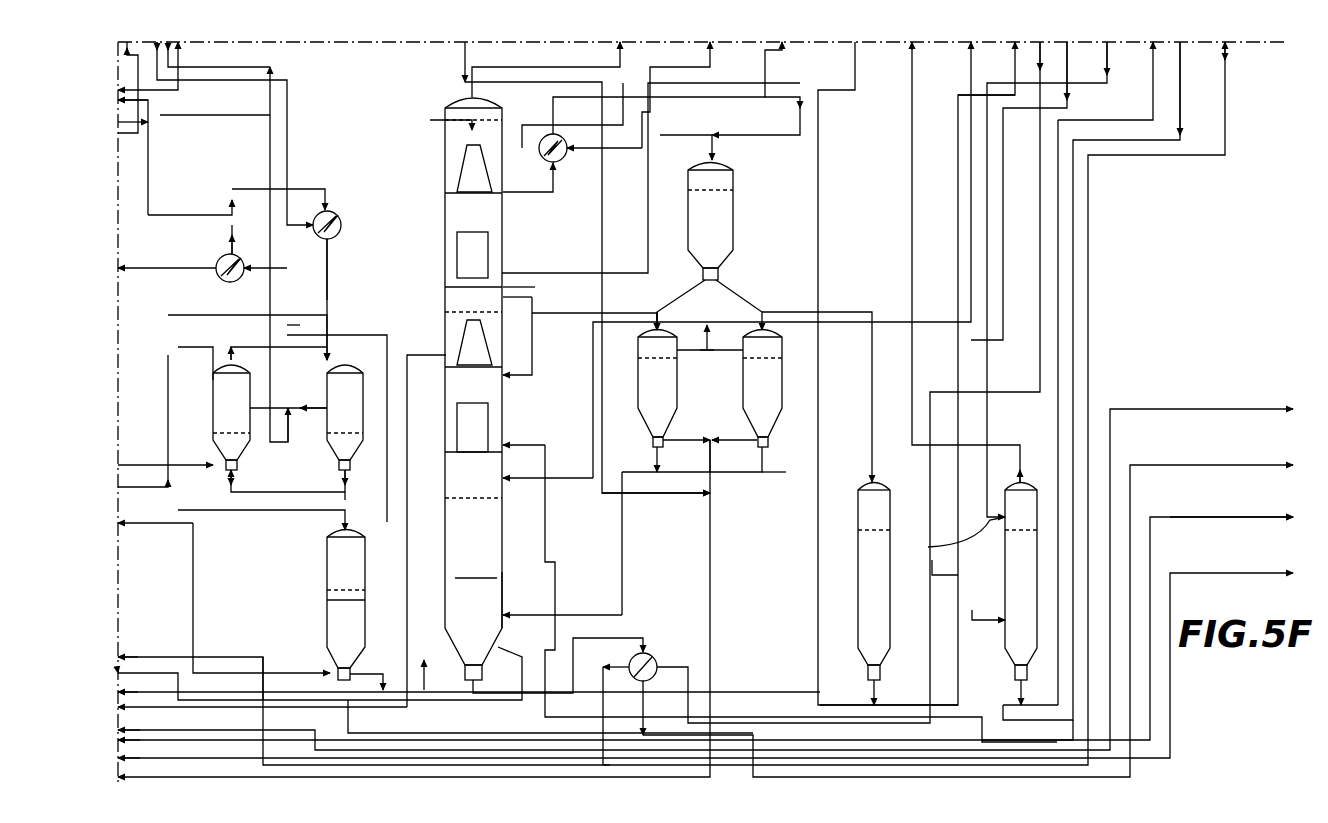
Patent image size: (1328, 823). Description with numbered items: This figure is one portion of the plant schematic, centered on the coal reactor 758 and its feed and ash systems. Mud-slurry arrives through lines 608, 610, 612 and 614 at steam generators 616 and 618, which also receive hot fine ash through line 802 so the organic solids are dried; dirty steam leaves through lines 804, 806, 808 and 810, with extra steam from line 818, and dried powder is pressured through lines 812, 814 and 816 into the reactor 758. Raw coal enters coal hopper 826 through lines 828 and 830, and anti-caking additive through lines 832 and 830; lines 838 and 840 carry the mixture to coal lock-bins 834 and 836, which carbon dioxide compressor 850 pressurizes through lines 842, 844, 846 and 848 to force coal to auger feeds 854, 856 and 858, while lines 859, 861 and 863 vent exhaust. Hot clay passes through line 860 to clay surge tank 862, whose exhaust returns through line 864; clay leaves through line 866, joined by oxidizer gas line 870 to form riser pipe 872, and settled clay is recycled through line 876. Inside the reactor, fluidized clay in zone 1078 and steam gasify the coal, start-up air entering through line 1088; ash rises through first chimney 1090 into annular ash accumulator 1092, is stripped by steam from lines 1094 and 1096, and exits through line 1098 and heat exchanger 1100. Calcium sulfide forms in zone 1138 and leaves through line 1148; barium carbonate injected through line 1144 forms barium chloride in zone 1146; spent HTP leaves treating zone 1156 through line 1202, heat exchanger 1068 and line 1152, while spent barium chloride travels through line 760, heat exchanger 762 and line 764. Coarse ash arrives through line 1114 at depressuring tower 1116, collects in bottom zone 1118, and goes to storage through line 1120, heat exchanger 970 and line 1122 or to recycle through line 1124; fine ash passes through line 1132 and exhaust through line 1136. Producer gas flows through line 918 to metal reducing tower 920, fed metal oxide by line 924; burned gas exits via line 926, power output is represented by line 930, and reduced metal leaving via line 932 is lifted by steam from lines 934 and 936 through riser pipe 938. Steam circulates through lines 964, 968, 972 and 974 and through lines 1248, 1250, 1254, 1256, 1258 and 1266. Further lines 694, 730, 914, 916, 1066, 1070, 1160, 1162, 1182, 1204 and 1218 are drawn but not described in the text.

The line 608 is at (215, 115).
The line 610 is at (289, 125).
The line 612 is at (288, 254).
The line 614 is at (312, 395).
The steam generator 616 is at (213, 405).
The steam generator 618 is at (345, 408).
The line 694 is at (140, 730).
The line 730 is at (128, 690).
The coal reactor 758 is at (505, 552).
The line 760 is at (465, 375).
The heat exchanger 762 is at (338, 218).
The line 764 is at (232, 215).
The line 802 is at (272, 92).
The line 804 is at (232, 315).
The line 806 is at (350, 320).
The line 808 is at (372, 345).
The line 810 is at (423, 531).
The line 812 is at (240, 478).
The line 814 is at (345, 478).
The line 816 is at (380, 500).
The line 818 is at (420, 718).
The coal hopper 826 is at (735, 225).
The line 828 is at (780, 125).
The line 830 is at (715, 145).
The line 832 is at (668, 122).
The coal lock-bin 834 is at (638, 400).
The coal lock-bin 836 is at (782, 395).
The line 838 is at (665, 310).
The line 840 is at (738, 275).
The line 842 is at (686, 426).
The line 844 is at (734, 426).
The line 846 is at (750, 462).
The line 848 is at (718, 520).
The carbon dioxide compressor 850 is at (525, 597).
The auger feed 854 is at (770, 460).
The auger feed 856 is at (656, 460).
The auger feed 858 is at (625, 493).
The line 859 is at (710, 357).
The line 860 is at (480, 690).
The line 861 is at (712, 380).
The clay surge tank 862 is at (892, 500).
The line 863 is at (780, 300).
The line 864 is at (530, 378).
The line 866 is at (866, 690).
The line 870 is at (820, 695).
The riser pipe 872 is at (895, 695).
The line 876 is at (1010, 48).
The line 914 is at (262, 650).
The line 916 is at (128, 100).
The line 918 is at (1087, 52).
The metal reducing tower 920 is at (1005, 560).
The line 924 is at (925, 548).
The line 926 is at (125, 125).
The line 930 is at (195, 757).
The line 932 is at (993, 675).
The line 934 is at (1072, 381).
The line 936 is at (1075, 725).
The riser pipe 938 is at (1060, 700).
The line 964 is at (632, 745).
The line 968 is at (672, 666).
The heat exchanger 970 is at (645, 653).
The line 972 is at (600, 668).
The line 974 is at (588, 740).
The line 1066 is at (645, 150).
The heat exchanger 1068 is at (568, 155).
The line 1070 is at (800, 83).
The zone 1078 is at (478, 567).
The line 1088 is at (128, 672).
The first chimney 1090 is at (490, 416).
The annular ash accumulator 1092 is at (520, 437).
The line 1094 is at (548, 680).
The line 1096 is at (785, 260).
The line 1098 is at (455, 480).
The heat exchanger 1100 is at (250, 245).
The line 1114 is at (133, 465).
The depressuring tower 1116 is at (325, 558).
The bottom zone 1118 is at (325, 600).
The line 1120 is at (612, 640).
The line 1122 is at (1205, 515).
The line 1124 is at (290, 712).
The line 1132 is at (135, 90).
The line 1136 is at (200, 348).
The zone 1138 is at (490, 244).
The line 1144 is at (360, 162).
The zone 1146 is at (530, 329).
The line 1148 is at (560, 265).
The line 1152 is at (790, 60).
The treating zone 1156 is at (492, 170).
The line 1160 is at (128, 655).
The line 1162 is at (430, 62).
The line 1182 is at (466, 60).
The line 1202 is at (528, 195).
The line 1204 is at (625, 55).
The line 1218 is at (540, 62).
The line 1248 is at (160, 512).
The line 1250 is at (168, 352).
The line 1254 is at (222, 255).
The line 1256 is at (328, 170).
The line 1258 is at (335, 280).
The line 1266 is at (143, 475).